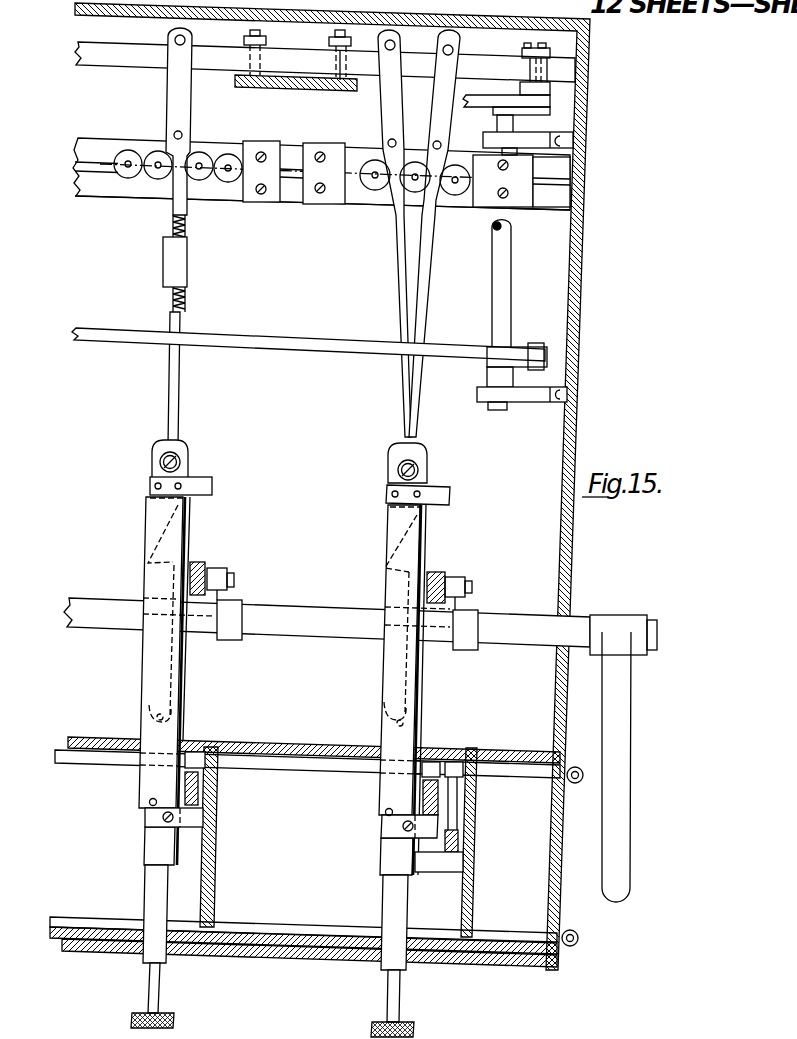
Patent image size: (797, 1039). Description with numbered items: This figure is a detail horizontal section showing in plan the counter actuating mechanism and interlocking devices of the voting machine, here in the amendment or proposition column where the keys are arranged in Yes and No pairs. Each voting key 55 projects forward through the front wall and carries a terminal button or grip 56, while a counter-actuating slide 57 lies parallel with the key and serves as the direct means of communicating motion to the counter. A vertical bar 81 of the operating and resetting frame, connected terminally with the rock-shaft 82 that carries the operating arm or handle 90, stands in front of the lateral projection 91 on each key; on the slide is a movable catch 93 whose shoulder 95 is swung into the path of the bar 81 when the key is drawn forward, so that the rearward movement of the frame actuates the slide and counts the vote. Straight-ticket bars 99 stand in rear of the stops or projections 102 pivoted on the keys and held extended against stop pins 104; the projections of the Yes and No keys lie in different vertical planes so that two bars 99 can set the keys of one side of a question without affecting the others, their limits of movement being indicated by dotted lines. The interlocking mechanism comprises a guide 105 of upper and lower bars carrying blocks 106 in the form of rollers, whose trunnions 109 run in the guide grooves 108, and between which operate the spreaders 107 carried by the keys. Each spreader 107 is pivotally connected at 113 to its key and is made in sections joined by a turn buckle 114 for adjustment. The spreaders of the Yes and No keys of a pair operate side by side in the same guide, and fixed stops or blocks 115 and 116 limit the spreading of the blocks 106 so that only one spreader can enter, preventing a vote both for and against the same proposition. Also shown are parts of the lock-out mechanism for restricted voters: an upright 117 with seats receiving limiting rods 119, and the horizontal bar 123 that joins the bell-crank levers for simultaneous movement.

The voting key 55 is at (155, 446).
The terminal button or grip 56 is at (168, 1018).
The counter-actuating slide 57 is at (152, 512).
The vertical bar of operating frame 81 is at (200, 565).
The rock-shaft 82 is at (660, 646).
The operating arm or handle 90 is at (633, 716).
The lateral projection 91 is at (214, 488).
The movable catch 93 is at (145, 572).
The shoulder 95 is at (172, 560).
The straight-ticket bar 99 is at (416, 786).
The stop or projection 102 is at (200, 822).
The stop pin 104 is at (149, 801).
The guide 105 is at (122, 187).
The block 106 is at (413, 180).
The spreader 107 is at (437, 126).
The guide groove 108 is at (97, 167).
The trunnion 109 is at (199, 165).
The pivotal connection 113 is at (184, 461).
The turn buckle 114 is at (188, 286).
The fixed stop or block 115 is at (337, 190).
The fixed stop or block 116 is at (482, 197).
The upright 117 is at (300, 86).
The limiting rod 119 is at (122, 62).
The horizontal bar 123 is at (326, 346).